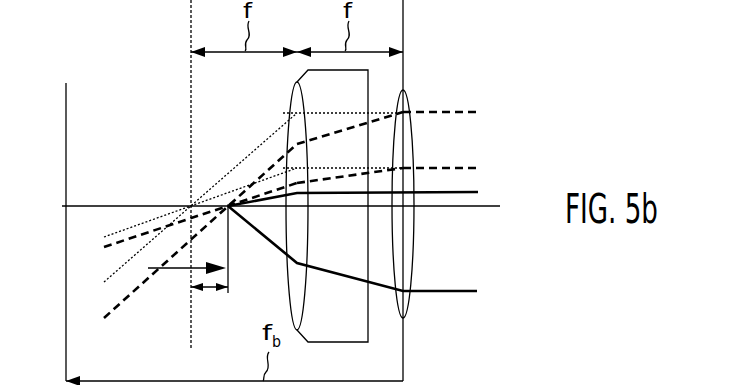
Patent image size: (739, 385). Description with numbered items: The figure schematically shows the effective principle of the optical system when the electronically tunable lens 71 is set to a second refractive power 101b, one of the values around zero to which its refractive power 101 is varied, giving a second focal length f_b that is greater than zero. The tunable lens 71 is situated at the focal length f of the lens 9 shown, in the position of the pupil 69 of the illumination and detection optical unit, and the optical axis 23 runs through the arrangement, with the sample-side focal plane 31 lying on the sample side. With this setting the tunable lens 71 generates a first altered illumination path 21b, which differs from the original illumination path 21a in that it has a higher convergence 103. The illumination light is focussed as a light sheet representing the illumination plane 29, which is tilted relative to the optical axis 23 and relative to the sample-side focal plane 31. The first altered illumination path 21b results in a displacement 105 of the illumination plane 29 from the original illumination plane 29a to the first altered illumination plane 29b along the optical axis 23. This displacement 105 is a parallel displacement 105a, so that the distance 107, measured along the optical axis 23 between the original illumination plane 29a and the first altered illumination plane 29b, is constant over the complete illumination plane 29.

The lens 9 is at (288, 100).
The original illumination path 21a is at (347, 112).
The first altered illumination path 21b is at (449, 195).
The higher convergence 103 is at (363, 120).
The optical axis 23 is at (87, 205).
The illumination plane 29 is at (291, 210).
The original illumination plane 29a is at (173, 217).
The first altered illumination plane 29b is at (246, 186).
The sample-side focal plane 31 is at (190, 66).
The pupil 69 is at (404, 354).
The electronically tunable lens 71 is at (414, 210).
The refractive power 101 is at (414, 210).
The second refractive power 101b is at (415, 146).
The displacement 105 is at (158, 302).
The parallel displacement 105a is at (175, 270).
The distance 107 is at (213, 295).